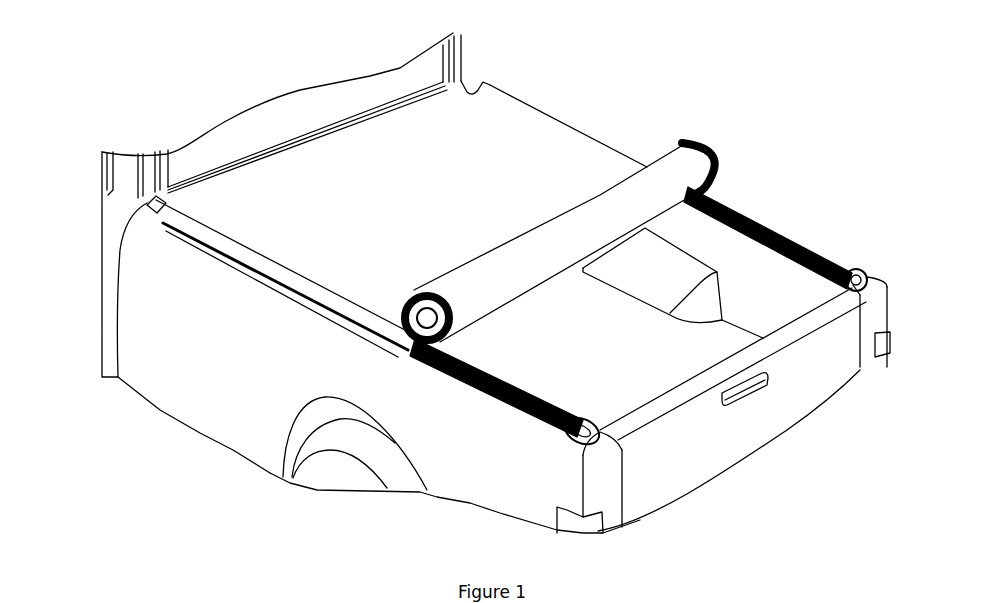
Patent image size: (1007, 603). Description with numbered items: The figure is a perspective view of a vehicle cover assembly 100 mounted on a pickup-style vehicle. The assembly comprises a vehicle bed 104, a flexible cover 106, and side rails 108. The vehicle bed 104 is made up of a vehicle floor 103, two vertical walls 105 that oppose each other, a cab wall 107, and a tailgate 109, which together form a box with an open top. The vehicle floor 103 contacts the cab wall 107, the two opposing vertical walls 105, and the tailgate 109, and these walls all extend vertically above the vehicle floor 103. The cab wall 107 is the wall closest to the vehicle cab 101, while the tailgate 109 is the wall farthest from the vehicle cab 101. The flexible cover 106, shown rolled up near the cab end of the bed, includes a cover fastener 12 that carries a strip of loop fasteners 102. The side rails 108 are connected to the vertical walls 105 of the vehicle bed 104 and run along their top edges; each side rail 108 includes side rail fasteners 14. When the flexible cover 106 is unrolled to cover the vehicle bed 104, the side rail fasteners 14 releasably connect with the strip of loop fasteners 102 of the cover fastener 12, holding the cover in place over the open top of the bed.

The vehicle cover assembly 100 is at (116, 100).
The cover fastener 12 is at (408, 283).
The side rail fasteners 14 is at (777, 228).
The vehicle cab 101 is at (438, 63).
The strip of loop fasteners 102 is at (420, 292).
The vehicle floor 103 is at (642, 373).
The vehicle bed 104 is at (864, 403).
The vertical walls 105 is at (248, 355).
The flexible cover 106 is at (452, 180).
The cab wall 107 is at (188, 177).
The side rails 108 is at (765, 195).
The tailgate 109 is at (713, 438).